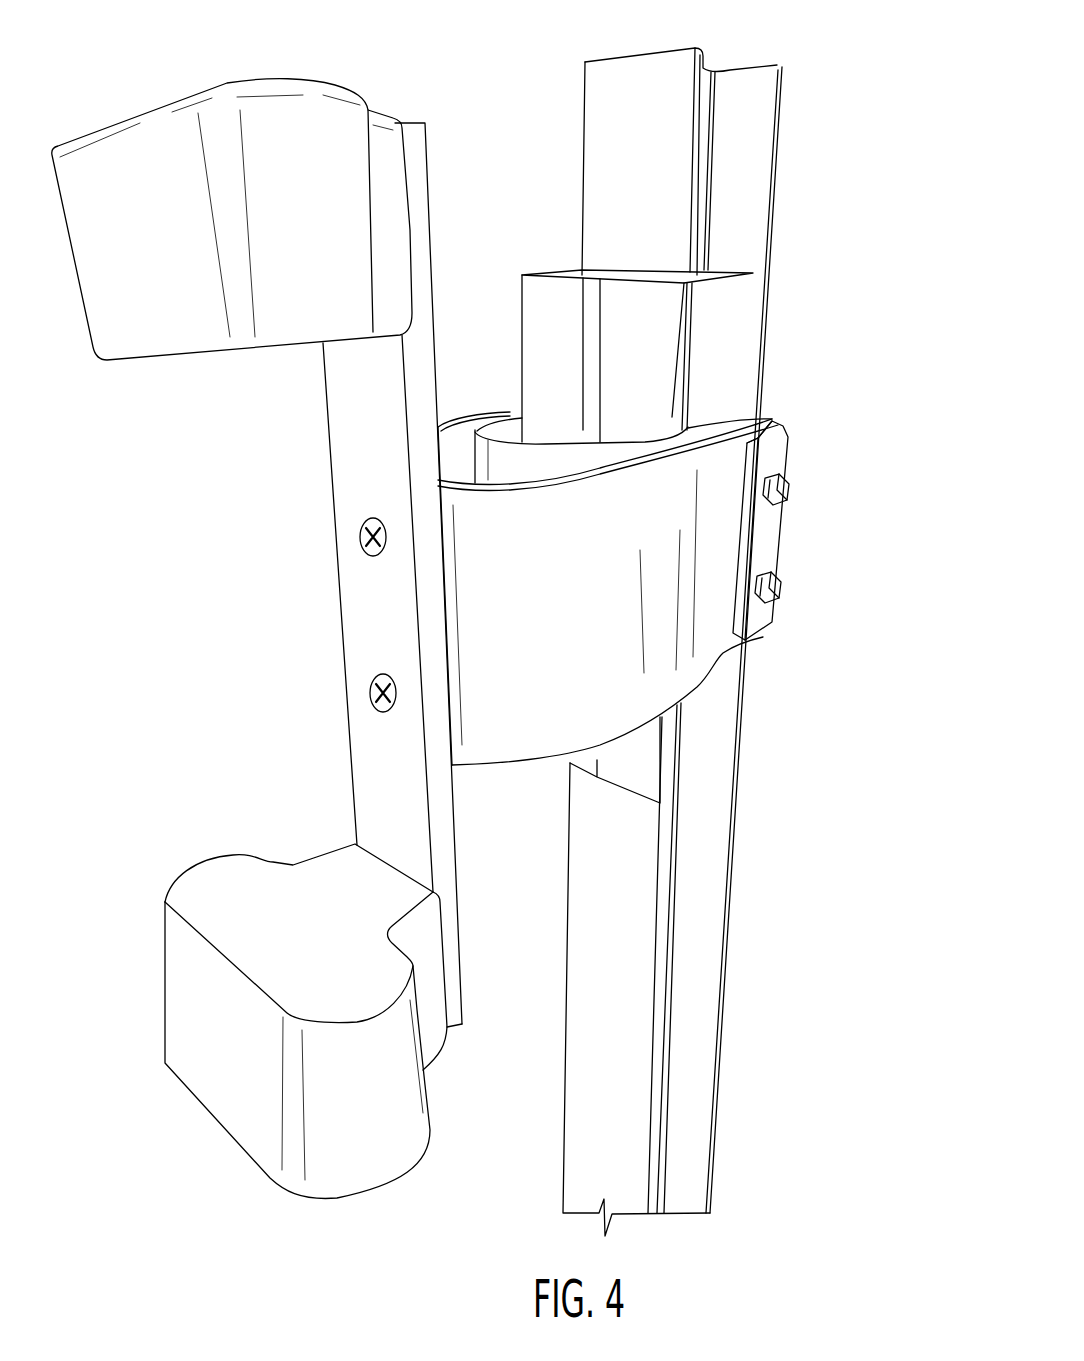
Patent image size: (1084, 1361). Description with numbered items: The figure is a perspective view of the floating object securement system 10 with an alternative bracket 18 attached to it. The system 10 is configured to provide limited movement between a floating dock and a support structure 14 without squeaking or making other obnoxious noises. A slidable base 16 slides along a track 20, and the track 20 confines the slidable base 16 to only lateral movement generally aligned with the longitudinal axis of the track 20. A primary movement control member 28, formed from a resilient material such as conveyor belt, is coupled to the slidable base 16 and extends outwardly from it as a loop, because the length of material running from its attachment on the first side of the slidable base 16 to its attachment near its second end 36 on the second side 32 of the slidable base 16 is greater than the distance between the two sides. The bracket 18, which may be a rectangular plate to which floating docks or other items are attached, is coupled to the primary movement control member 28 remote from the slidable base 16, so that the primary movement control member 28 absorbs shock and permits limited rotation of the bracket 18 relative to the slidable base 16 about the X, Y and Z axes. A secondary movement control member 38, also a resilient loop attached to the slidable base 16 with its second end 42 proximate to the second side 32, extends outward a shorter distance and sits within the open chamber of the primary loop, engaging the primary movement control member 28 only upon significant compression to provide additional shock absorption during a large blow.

The floating object securement system 10 is at (502, 68).
The support structure 14 is at (828, 188).
The slidable base 16 is at (733, 315).
The bracket 18 is at (368, 622).
The track 20 is at (772, 77).
The primary movement control member 28 is at (643, 727).
The second side 32 is at (772, 532).
The second end 36 is at (780, 428).
The secondary movement control member 38 is at (647, 442).
The second end 42 is at (767, 412).